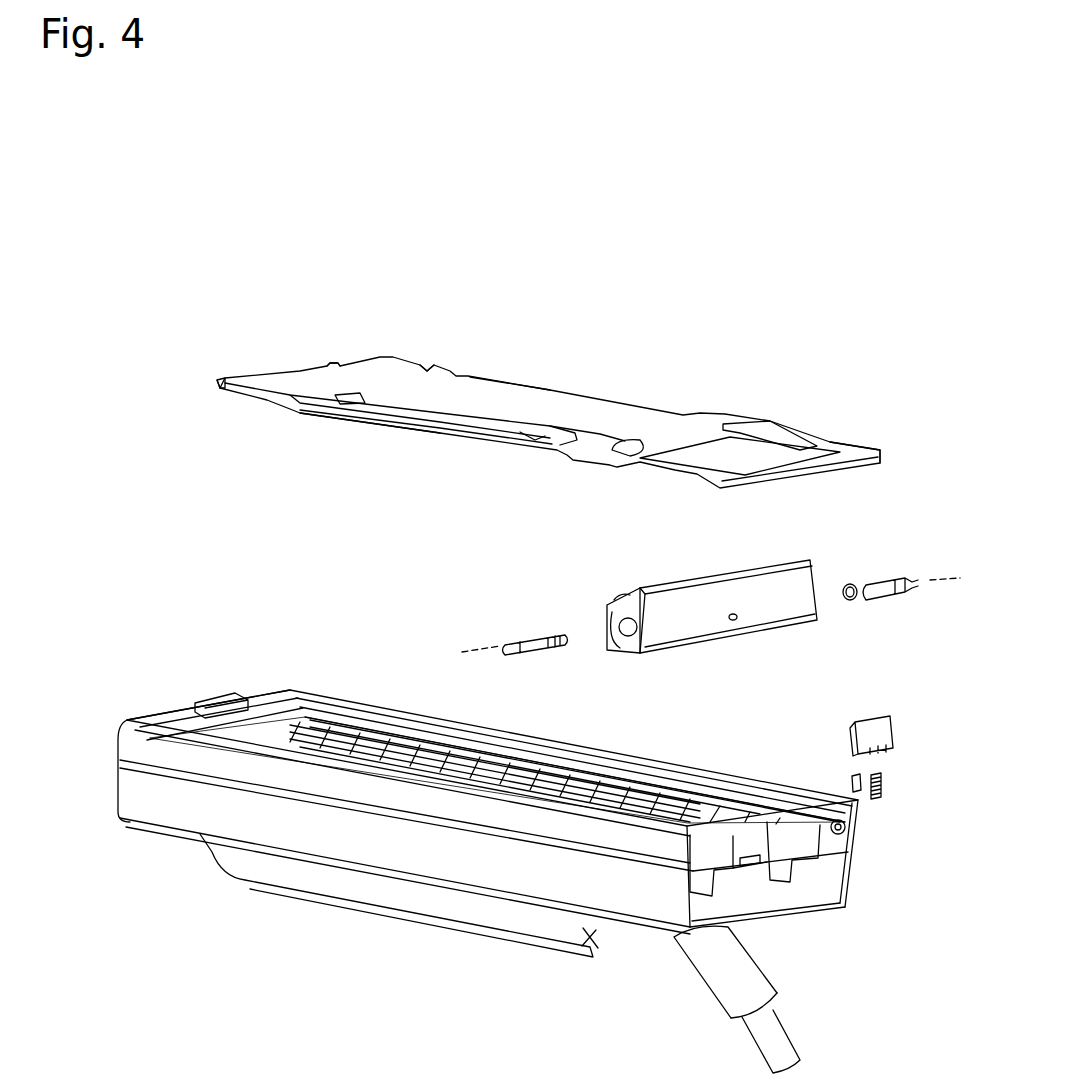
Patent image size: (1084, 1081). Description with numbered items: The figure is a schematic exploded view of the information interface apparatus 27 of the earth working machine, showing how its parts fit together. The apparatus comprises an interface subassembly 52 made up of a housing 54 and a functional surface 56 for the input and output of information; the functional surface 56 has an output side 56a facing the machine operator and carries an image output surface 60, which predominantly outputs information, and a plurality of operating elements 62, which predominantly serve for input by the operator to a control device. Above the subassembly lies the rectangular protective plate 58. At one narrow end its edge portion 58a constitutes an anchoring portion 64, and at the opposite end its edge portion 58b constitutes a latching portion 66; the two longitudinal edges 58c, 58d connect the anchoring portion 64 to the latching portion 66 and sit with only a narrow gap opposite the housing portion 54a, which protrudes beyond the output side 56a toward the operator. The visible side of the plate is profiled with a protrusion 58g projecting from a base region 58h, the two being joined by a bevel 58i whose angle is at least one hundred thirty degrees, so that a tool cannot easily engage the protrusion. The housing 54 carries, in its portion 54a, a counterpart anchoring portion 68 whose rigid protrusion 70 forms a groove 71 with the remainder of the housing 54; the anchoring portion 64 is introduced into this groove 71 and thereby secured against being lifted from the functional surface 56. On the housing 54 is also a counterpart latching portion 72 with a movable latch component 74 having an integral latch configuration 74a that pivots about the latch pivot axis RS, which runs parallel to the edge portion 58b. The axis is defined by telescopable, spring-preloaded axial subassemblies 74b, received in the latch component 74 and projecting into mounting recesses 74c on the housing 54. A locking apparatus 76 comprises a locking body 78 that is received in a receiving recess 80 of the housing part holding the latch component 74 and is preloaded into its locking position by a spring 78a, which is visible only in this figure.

The information interface apparatus 27 is at (308, 178).
The interface subassembly 52 is at (500, 816).
The housing 54 is at (130, 808).
The housing portion 54a is at (116, 732).
The functional surface 56 is at (497, 731).
The output side 56a is at (493, 780).
The protective plate 58 is at (415, 375).
The edge portion 58a is at (238, 371).
The edge portion 58b is at (852, 443).
The longitudinal edge 58c is at (360, 425).
The longitudinal edge 58d is at (496, 388).
The protrusion 58g is at (430, 370).
The base region 58h is at (530, 437).
The bevel 58i is at (633, 437).
The image output surface 60 is at (525, 790).
The operating elements 62 is at (620, 790).
The anchoring portion 64 is at (327, 356).
The latching portion 66 is at (814, 437).
The counterpart anchoring portion 68 is at (238, 659).
The protrusion 70 is at (230, 690).
The groove 71 is at (283, 707).
The counterpart latching portion 72 is at (722, 582).
The latch component 74 is at (700, 622).
The latch configuration 74a is at (624, 588).
The axial subassemblies 74b is at (517, 627).
The mounting recesses 74c is at (862, 836).
The locking apparatus 76 is at (874, 723).
The locking body 78 is at (853, 733).
The spring 78a is at (884, 790).
The receiving recess 80 is at (770, 838).
The latch pivot axis RS is at (936, 578).